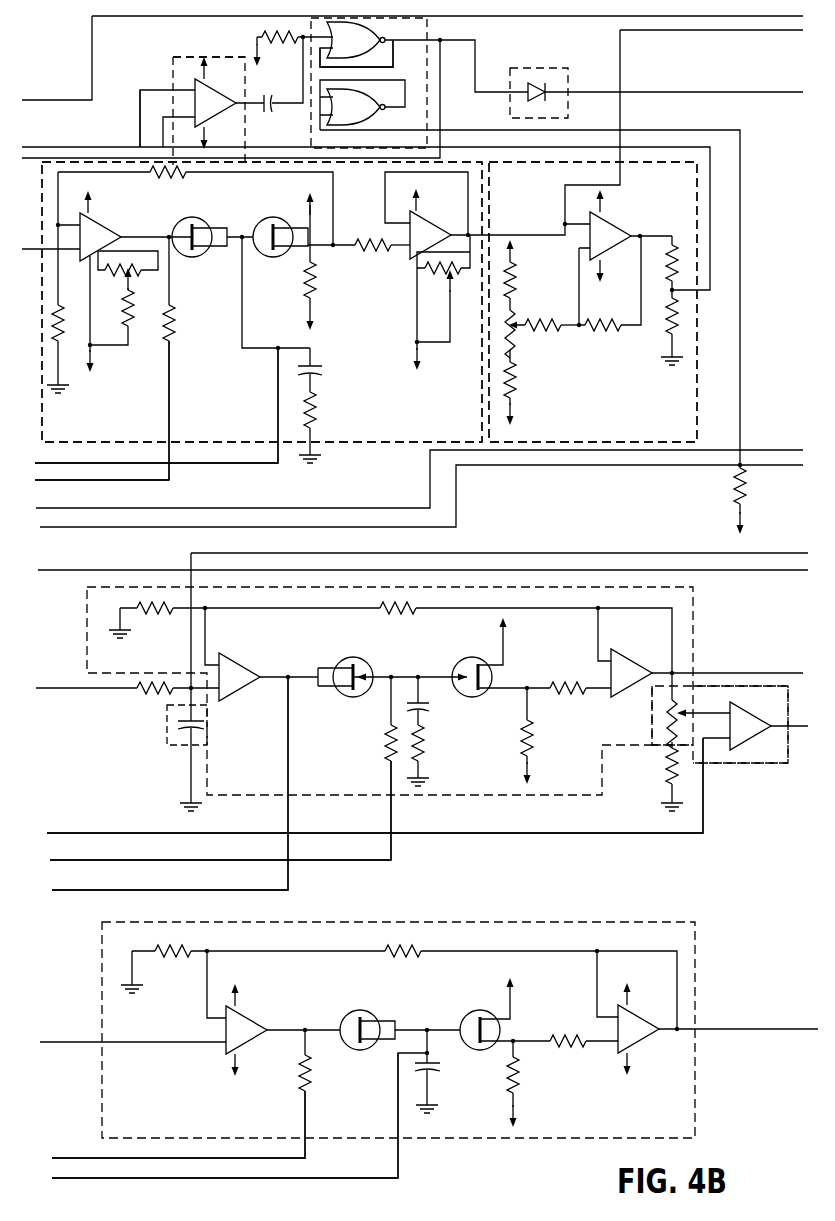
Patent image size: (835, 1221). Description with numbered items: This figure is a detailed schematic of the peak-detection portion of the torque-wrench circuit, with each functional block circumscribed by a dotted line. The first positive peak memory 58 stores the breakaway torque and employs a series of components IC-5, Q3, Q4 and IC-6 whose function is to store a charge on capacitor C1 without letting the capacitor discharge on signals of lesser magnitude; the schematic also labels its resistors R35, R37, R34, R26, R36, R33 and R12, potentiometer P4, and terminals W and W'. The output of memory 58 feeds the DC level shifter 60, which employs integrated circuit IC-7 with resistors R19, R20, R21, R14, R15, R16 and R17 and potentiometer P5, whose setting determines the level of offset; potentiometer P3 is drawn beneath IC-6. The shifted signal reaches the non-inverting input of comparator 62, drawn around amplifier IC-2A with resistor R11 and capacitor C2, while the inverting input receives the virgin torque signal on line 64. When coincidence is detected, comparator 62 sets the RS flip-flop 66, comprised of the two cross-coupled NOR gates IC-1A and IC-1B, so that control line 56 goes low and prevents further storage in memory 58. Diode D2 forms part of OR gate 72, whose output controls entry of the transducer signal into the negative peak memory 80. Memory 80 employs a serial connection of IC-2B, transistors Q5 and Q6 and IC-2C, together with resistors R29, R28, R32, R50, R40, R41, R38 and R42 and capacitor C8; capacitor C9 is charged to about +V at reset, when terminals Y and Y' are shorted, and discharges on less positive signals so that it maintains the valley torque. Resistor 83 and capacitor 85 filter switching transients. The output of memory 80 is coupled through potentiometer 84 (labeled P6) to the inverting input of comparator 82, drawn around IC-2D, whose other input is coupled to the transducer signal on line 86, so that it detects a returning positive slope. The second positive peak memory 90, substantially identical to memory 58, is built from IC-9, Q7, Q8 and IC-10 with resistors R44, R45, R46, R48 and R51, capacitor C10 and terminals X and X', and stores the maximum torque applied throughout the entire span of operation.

The control line 56 is at (440, 61).
The positive peak memory 58 is at (414, 432).
The DC level shifter 60 is at (676, 404).
The comparator 62 is at (175, 70).
The line 64 is at (140, 113).
The RS flip-flop 66 is at (416, 96).
The OR gate 72 is at (558, 76).
The negative peak memory 80 is at (500, 785).
The comparator 82 is at (742, 692).
The resistor 83 is at (135, 683).
The potentiometer 84 is at (690, 702).
The capacitor 85 is at (170, 740).
The line 86 is at (703, 806).
The second positive peak memory 90 is at (685, 1110).
The operational amplifier IC-2A is at (230, 86).
The NOR gate IC-1A is at (357, 46).
The NOR gate IC-1B is at (357, 106).
The resistor R11 is at (267, 36).
The capacitor C2 is at (268, 112).
The diode D2 is at (531, 67).
The integrated circuit IC-5 is at (104, 232).
The integrated circuit IC-6 is at (421, 231).
The integrated circuit IC-7 is at (612, 233).
The transistor Q3 is at (183, 218).
The transistor Q4 is at (256, 218).
The resistor R35 is at (186, 176).
The resistor R37 is at (368, 244).
The resistor R19 is at (682, 250).
The resistor R20 is at (678, 320).
The resistor R21 is at (736, 490).
The potentiometer P4 is at (126, 281).
The resistor R33 is at (134, 308).
The resistor R34 is at (172, 330).
The resistor R26 is at (66, 335).
The resistor R36 is at (314, 282).
The capacitor C1 is at (320, 363).
The resistor R12 is at (315, 400).
The W signal terminal W is at (117, 410).
The W' signal terminal W' is at (157, 404).
The potentiometer P3 is at (455, 275).
The resistor R14 is at (514, 280).
The potentiometer P5 is at (514, 338).
The resistor R15 is at (545, 330).
The resistor R16 is at (602, 330).
The resistor R17 is at (516, 385).
The resistor R29 is at (172, 612).
The resistor R28 is at (148, 693).
The capacitor C8 is at (203, 715).
The integrated circuit IC-2B is at (230, 651).
The transistor Q5 is at (362, 660).
The transistor Q6 is at (462, 660).
The resistor R32 is at (395, 612).
The resistor R50 is at (388, 742).
The resistor R40 is at (426, 744).
The capacitor C9 is at (429, 703).
The resistor R41 is at (563, 675).
The resistor R38 is at (534, 738).
The integrated circuit IC-2C is at (618, 646).
The potentiometer P6 is at (666, 703).
The resistor R42 is at (668, 778).
The operational amplifier IC-2D is at (745, 732).
The terminal Y is at (183, 783).
The terminal Y' is at (220, 810).
The resistor R44 is at (253, 981).
The resistor R45 is at (403, 952).
The operational amplifier IC-9 is at (226, 1028).
The operational amplifier IC-10 is at (636, 1033).
The field effect transistor Q7 is at (348, 1017).
The field effect transistor Q8 is at (467, 1018).
The resistor R46 is at (312, 1082).
The resistor R48 is at (563, 1038).
The resistor R51 is at (519, 1084).
The capacitor C10 is at (438, 1060).
The X signal terminal X is at (191, 1124).
The X' signal terminal X' is at (240, 1104).